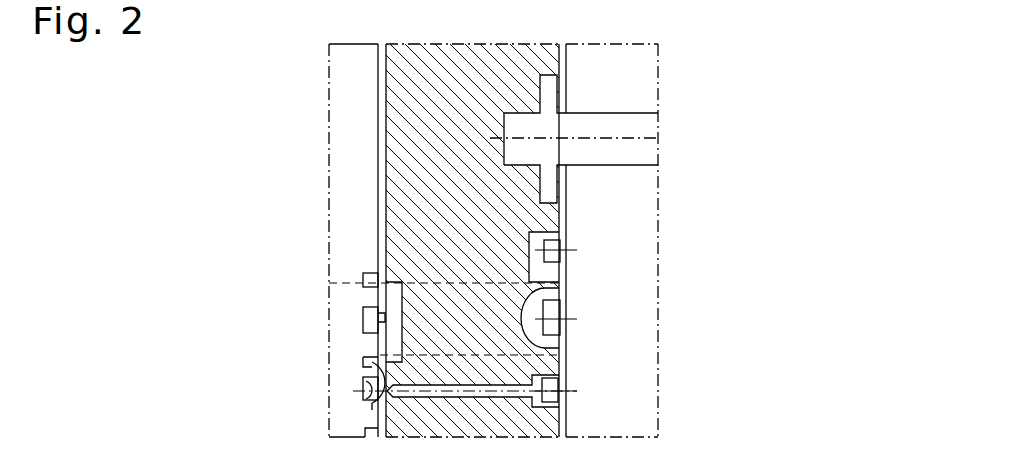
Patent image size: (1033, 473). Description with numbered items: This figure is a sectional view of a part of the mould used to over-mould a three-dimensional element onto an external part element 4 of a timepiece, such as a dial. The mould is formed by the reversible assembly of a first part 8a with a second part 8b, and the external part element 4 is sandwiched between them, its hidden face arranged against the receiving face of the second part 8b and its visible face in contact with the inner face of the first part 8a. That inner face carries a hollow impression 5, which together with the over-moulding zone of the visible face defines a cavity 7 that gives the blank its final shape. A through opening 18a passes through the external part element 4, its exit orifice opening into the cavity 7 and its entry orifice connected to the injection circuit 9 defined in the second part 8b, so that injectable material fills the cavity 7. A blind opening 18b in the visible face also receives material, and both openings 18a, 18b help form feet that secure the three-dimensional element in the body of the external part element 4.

The external part element 4 is at (381, 224).
The impression 5 is at (364, 382).
The cavity 7 is at (370, 404).
The first part 8a is at (352, 78).
The second part 8b is at (418, 156).
The injection circuit 9 is at (600, 118).
The through opening 18a is at (378, 364).
The blind opening 18b is at (377, 318).